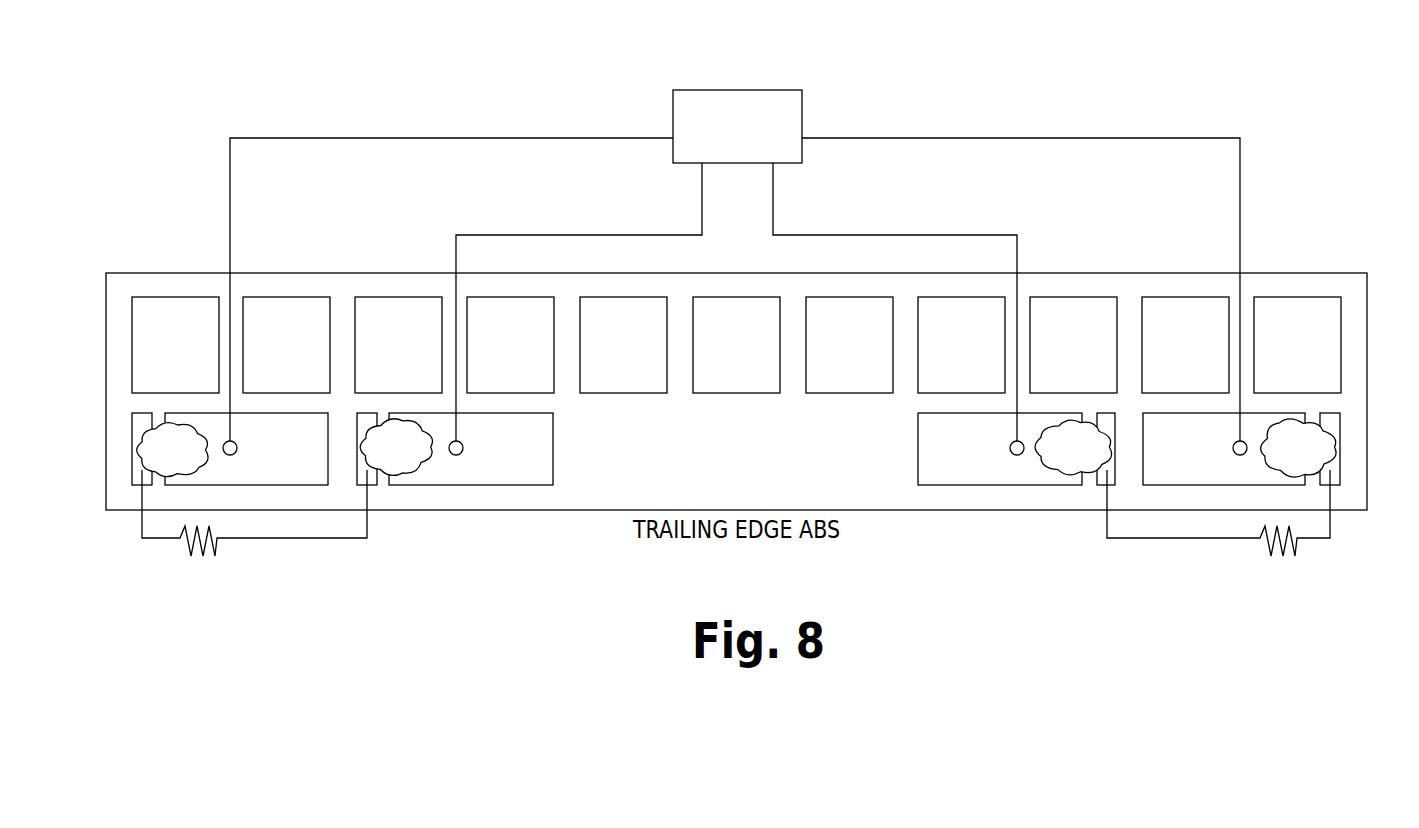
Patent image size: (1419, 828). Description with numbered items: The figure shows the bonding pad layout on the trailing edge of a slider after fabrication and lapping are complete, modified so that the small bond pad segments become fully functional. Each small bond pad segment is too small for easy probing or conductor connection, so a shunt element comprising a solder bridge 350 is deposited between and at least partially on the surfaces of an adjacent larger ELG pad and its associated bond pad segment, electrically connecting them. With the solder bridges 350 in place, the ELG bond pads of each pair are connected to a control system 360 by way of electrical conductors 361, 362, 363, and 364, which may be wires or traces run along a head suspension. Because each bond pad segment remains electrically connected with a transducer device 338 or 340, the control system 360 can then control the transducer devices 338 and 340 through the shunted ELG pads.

The control system 360 is at (773, 120).
The electrical conductor 361 is at (378, 140).
The electrical conductor 362 is at (538, 235).
The electrical conductor 363 is at (1038, 138).
The electrical conductor 364 is at (922, 235).
The solder bridge 350 is at (140, 450).
The transducer device 338 is at (210, 566).
The transducer device 340 is at (1264, 563).